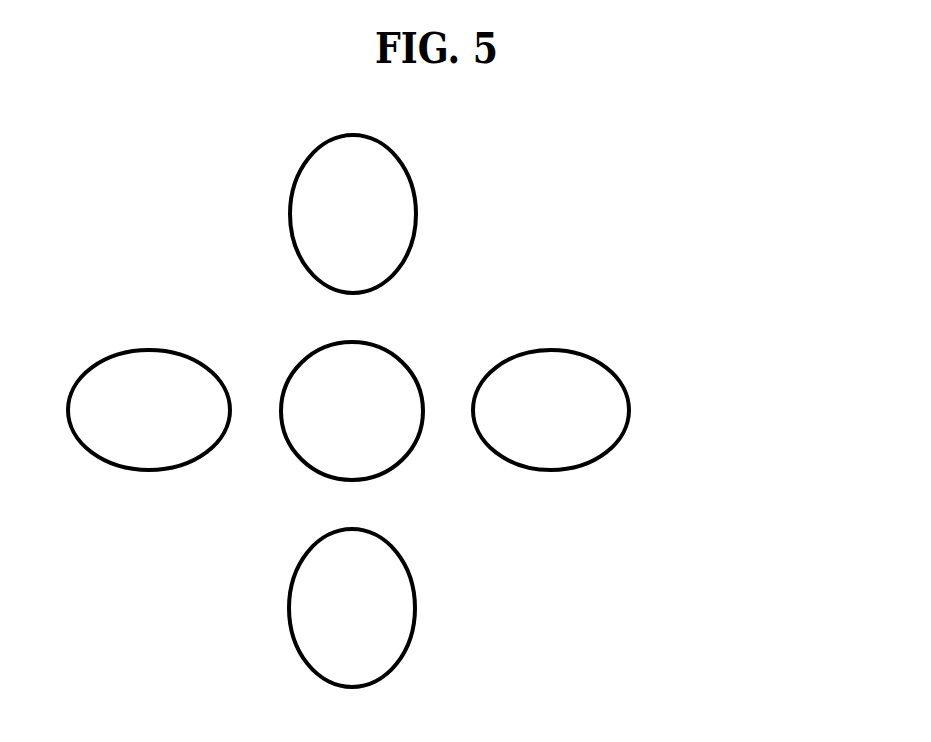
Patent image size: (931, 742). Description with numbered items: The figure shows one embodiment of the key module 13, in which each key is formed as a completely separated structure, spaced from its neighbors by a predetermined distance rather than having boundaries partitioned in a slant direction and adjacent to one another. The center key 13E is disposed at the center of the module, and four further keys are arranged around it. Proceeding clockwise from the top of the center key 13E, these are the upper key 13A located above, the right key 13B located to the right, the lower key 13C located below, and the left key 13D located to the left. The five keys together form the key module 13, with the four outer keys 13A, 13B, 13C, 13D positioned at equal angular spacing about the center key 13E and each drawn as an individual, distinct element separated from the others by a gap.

The key module 13 is at (560, 227).
The upper key 13A is at (300, 207).
The right key 13B is at (548, 465).
The lower key 13C is at (297, 607).
The left key 13D is at (160, 353).
The center key 13E is at (395, 370).